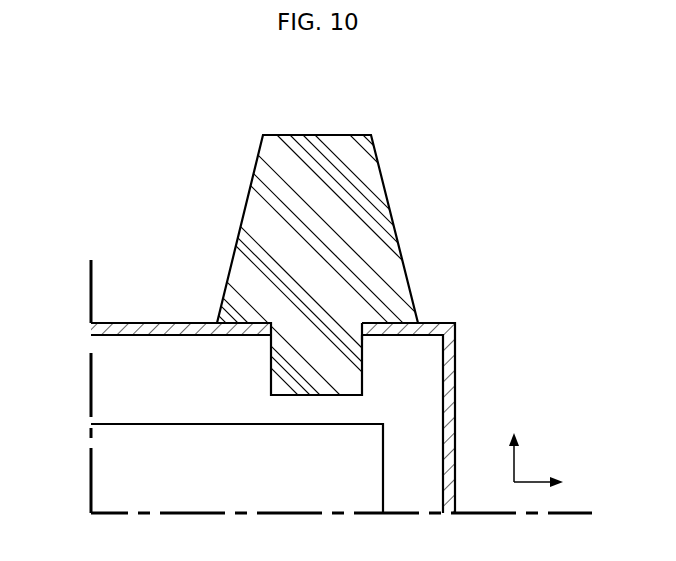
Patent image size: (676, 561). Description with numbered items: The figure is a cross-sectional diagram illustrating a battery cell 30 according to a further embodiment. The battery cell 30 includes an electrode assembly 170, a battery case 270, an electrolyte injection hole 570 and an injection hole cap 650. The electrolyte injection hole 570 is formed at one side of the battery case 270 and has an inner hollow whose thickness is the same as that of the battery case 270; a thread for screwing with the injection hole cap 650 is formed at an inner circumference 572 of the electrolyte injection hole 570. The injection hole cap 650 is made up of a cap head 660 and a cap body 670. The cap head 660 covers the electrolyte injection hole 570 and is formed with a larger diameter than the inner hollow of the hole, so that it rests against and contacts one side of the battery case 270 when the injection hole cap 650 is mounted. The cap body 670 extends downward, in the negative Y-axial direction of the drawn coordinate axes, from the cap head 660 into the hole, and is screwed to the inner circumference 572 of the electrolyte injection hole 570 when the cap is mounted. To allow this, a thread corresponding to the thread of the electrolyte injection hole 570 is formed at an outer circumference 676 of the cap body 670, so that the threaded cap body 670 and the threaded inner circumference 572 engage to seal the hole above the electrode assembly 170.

The battery cell 30 is at (142, 173).
The electrode assembly 170 is at (94, 464).
The battery case 270 is at (94, 328).
The electrolyte injection hole 570 is at (372, 322).
The inner circumference 572 is at (363, 335).
The injection hole cap 650 is at (445, 148).
The cap head 660 is at (250, 191).
The cap body 670 is at (307, 363).
The outer circumference 676 is at (268, 329).